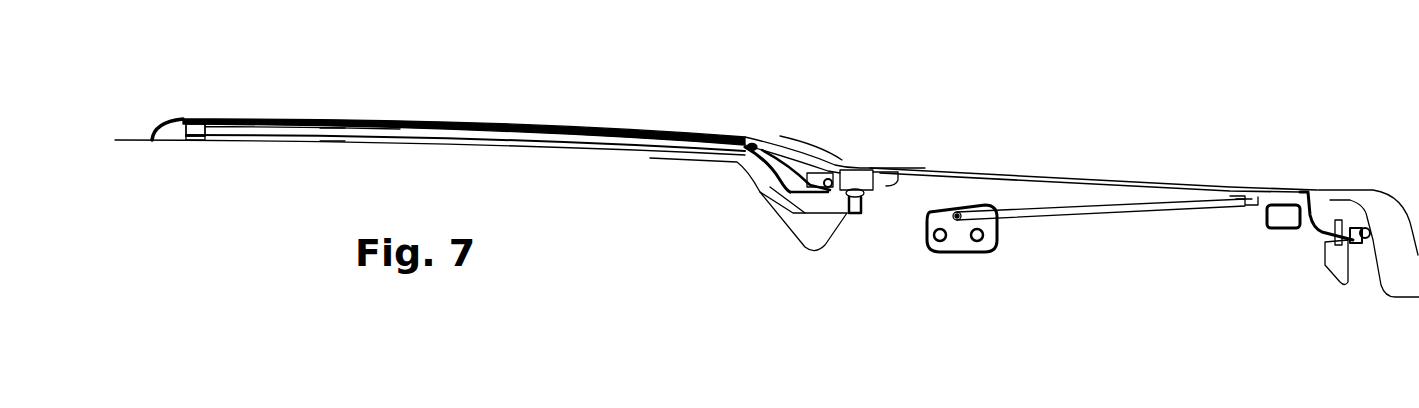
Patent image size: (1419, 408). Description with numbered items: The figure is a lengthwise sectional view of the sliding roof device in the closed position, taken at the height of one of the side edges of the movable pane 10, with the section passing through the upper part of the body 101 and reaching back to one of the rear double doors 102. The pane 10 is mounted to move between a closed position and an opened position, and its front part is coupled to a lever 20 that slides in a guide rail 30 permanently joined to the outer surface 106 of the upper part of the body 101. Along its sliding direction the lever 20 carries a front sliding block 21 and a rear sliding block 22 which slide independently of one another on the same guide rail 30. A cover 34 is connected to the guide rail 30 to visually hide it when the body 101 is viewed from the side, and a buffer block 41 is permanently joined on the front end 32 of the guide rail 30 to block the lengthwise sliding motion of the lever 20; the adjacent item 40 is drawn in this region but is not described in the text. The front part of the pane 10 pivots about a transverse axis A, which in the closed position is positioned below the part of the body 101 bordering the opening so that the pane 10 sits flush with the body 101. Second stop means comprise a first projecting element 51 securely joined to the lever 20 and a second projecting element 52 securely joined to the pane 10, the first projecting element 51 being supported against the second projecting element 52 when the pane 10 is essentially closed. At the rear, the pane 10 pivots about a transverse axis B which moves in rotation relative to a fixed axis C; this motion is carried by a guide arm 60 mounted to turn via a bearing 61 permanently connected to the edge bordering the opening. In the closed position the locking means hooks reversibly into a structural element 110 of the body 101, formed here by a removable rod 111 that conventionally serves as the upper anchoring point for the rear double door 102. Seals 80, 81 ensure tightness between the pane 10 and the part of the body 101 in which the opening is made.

The body 101 is at (132, 139).
The cover 34 is at (578, 124).
The front end 32 is at (225, 120).
The guide rail 30 is at (532, 143).
The buffer block 41 is at (197, 128).
The weatherstrip 40 is at (197, 142).
The outer surface 106 is at (340, 141).
The front sliding block 21 is at (740, 137).
The lever 20 is at (797, 162).
The rear sliding block 22 is at (770, 185).
The first projecting element 51 is at (772, 213).
The second projecting element 52 is at (820, 175).
The axis A is at (840, 178).
The seal 81 is at (900, 172).
The pane 10 is at (1170, 180).
The guide arm 60 is at (1088, 208).
The fixed axis C is at (958, 210).
The bearing 61 is at (960, 252).
The axis B is at (1245, 207).
The removable rod 111 is at (1283, 230).
The structural element 110 is at (1258, 232).
The seal 80 is at (1367, 250).
The rear double door 102 is at (1370, 197).